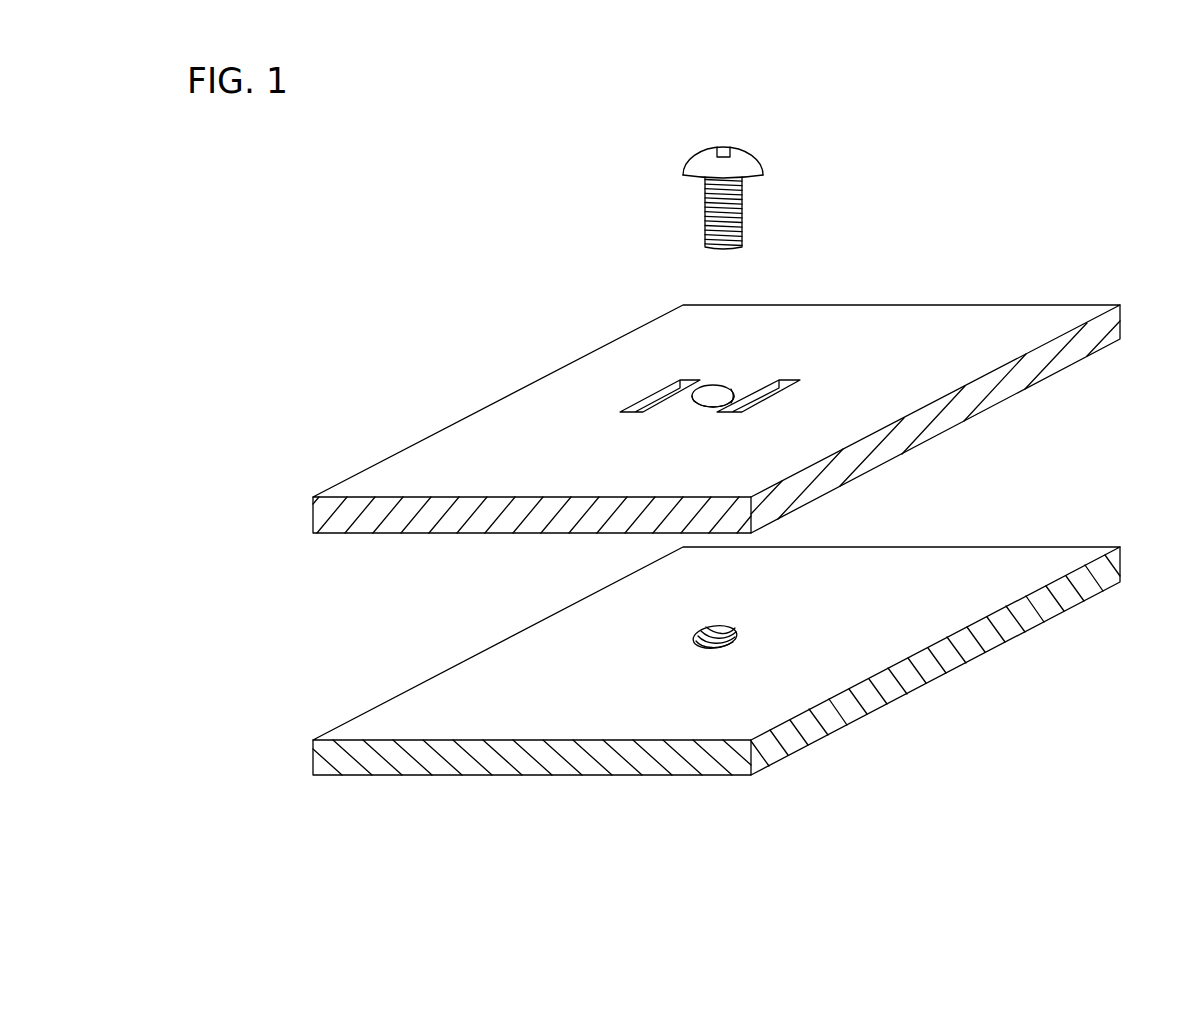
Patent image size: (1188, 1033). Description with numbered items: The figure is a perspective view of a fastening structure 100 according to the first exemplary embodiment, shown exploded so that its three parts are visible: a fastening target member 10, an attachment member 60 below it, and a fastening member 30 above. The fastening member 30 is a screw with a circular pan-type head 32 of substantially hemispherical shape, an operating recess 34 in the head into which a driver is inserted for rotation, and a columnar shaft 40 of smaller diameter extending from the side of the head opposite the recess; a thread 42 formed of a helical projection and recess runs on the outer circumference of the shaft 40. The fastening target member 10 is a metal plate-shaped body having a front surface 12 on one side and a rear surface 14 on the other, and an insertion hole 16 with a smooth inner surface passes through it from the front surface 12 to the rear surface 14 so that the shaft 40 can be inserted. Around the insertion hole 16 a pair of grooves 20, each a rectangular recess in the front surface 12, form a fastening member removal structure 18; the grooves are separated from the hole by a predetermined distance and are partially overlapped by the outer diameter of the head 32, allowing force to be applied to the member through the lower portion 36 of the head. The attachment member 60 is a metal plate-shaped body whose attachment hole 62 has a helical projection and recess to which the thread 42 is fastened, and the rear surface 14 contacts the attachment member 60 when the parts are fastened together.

The fastening structure 100 is at (1183, 248).
The fastening target member 10 is at (716, 396).
The front surface 12 is at (422, 458).
The rear surface 14 is at (388, 534).
The insertion hole 16 is at (717, 386).
The fastening member removal structure 18 is at (723, 424).
The grooves 20 is at (642, 405).
The fastening member 30 is at (712, 193).
The head 32 is at (693, 159).
The operating recess 34 is at (727, 146).
The lower portion 36 is at (763, 175).
The shaft 40 is at (711, 235).
The thread 42 is at (705, 205).
The attachment member 60 is at (727, 661).
The attachment hole 62 is at (738, 637).